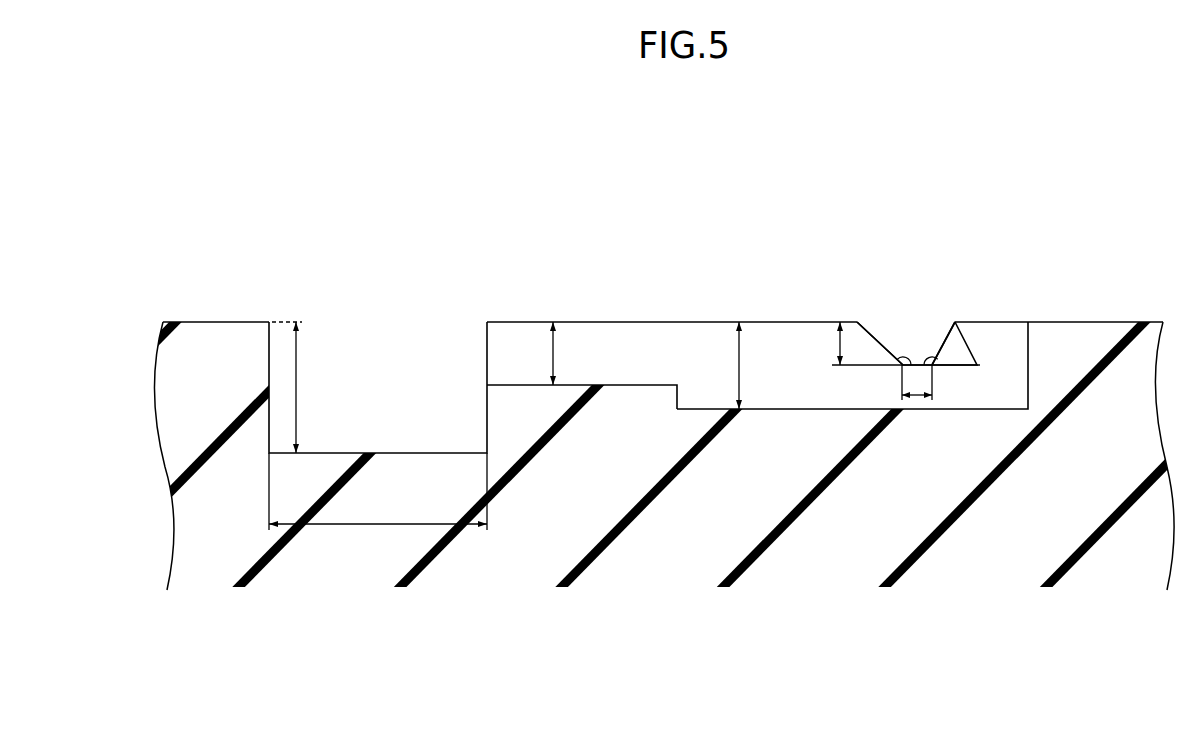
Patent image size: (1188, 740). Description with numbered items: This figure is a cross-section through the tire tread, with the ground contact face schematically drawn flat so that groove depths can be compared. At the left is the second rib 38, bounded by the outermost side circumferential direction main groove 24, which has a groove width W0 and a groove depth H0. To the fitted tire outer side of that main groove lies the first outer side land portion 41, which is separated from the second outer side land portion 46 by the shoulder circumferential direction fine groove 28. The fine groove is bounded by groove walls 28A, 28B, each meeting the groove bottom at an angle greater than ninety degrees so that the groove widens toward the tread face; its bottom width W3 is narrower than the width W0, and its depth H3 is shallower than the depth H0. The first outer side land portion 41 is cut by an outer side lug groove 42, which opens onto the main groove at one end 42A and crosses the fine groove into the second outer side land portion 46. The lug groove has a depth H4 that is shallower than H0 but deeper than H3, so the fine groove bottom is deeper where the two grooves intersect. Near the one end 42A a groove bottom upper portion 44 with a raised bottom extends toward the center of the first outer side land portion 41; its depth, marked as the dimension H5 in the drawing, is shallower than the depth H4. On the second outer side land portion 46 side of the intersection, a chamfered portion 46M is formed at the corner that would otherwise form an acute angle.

The second rib 38 is at (210, 322).
The outermost side circumferential direction main groove 24 is at (487, 428).
The one end of outer side lug groove 42A is at (487, 366).
The groove bottom upper portion 44 is at (617, 385).
The first outer side land portion 41 is at (677, 322).
The outer side lug groove 42 is at (772, 409).
The shoulder circumferential direction fine groove 28 is at (917, 363).
The groove wall 28A is at (880, 333).
The groove wall 28B is at (935, 338).
The chamfered portion 46M is at (957, 350).
The second outer side land portion 46 is at (1090, 322).
The groove depth H0 is at (300, 392).
The groove width W0 is at (350, 525).
The first layer thickness H5 is at (553, 353).
The groove depth H4 is at (739, 360).
The groove depth H3 is at (840, 348).
The groove width W3 is at (918, 410).